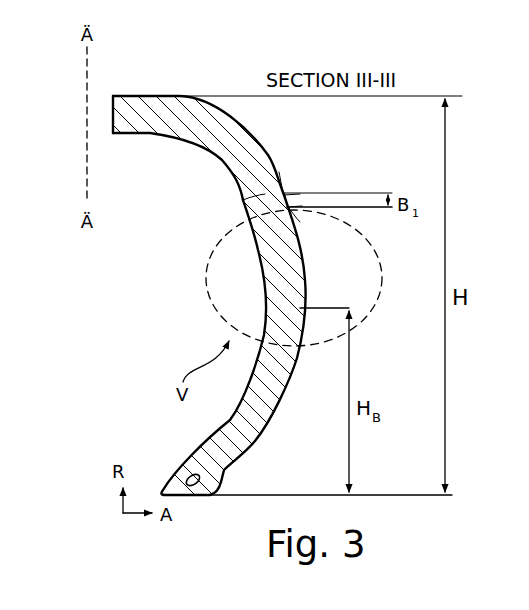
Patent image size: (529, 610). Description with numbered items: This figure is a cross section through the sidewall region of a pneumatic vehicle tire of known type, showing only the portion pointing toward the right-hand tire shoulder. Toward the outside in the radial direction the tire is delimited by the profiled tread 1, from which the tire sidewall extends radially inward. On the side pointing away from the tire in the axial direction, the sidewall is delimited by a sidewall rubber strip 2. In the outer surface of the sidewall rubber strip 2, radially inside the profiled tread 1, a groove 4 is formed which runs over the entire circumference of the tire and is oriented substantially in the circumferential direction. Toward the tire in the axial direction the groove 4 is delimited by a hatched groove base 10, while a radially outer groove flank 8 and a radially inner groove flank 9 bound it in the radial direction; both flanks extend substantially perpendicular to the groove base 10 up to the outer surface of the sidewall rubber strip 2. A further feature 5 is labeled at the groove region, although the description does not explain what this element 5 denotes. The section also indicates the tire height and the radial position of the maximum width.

The profiled tread 1 is at (167, 118).
The sidewall rubber strip 2 is at (305, 293).
The groove 4 is at (286, 197).
The thin-walled lip / sealing rib 5 is at (292, 203).
The groove flank 8 is at (285, 195).
The groove flank 9 is at (290, 210).
The groove base 10 is at (287, 193).